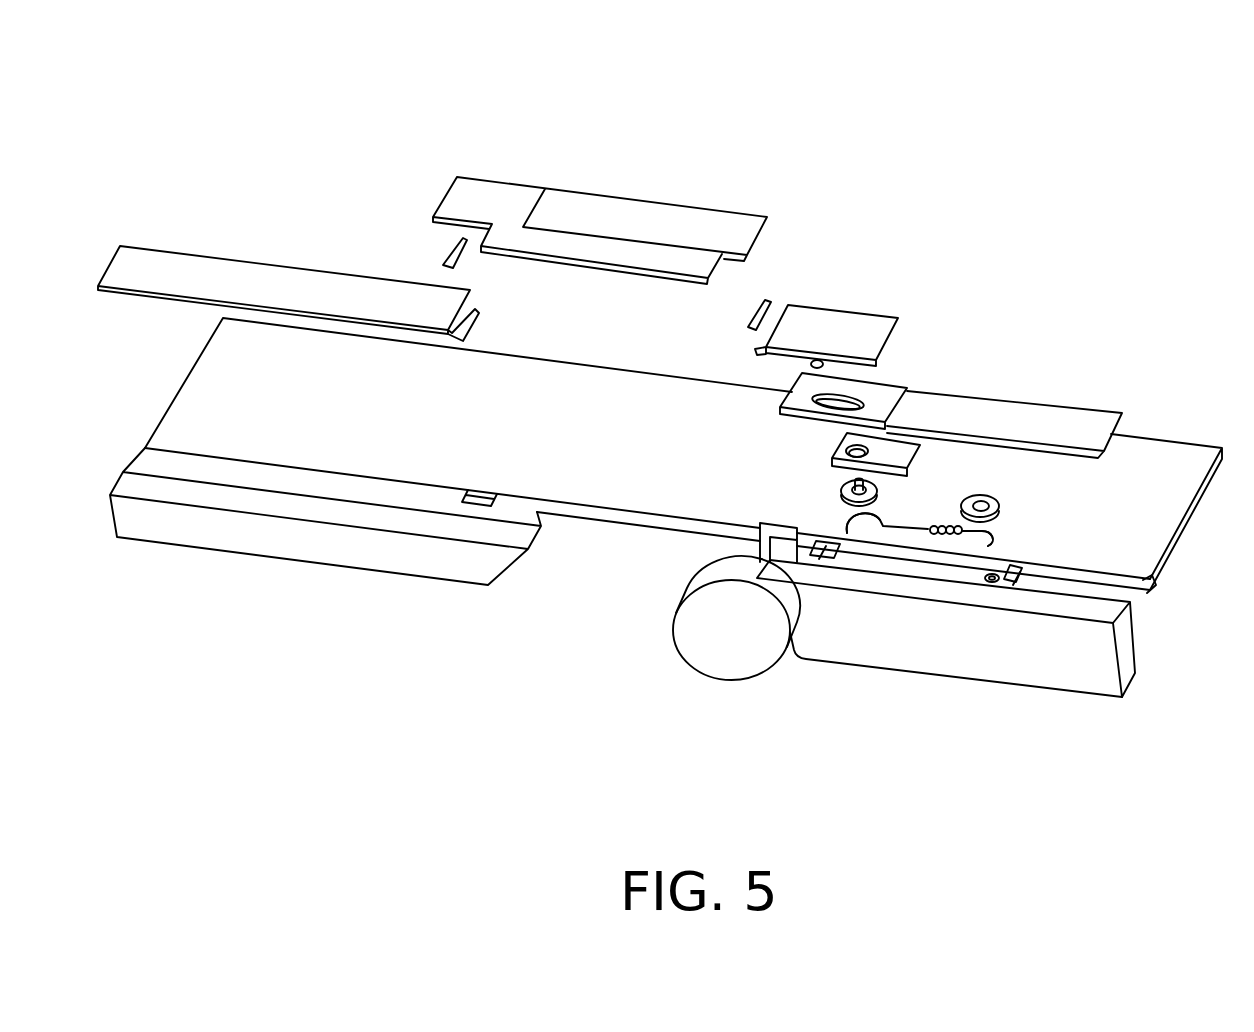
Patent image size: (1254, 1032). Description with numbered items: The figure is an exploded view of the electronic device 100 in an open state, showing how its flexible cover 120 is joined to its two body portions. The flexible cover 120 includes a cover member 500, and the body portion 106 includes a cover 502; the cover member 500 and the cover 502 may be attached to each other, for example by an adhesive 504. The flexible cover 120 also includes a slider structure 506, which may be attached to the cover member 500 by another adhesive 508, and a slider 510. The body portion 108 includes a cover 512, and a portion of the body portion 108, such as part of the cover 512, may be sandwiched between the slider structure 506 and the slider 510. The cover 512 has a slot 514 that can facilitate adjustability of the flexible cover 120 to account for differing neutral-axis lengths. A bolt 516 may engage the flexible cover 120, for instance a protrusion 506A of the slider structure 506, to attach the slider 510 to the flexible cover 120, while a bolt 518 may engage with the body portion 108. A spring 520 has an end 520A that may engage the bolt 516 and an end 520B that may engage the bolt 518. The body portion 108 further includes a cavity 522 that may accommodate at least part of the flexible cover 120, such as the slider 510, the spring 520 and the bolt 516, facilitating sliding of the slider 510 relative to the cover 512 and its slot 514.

The electronic device 100 is at (502, 667).
The body portion 106 is at (213, 552).
The body portion 108 is at (1097, 697).
The flexible cover 120 is at (659, 130).
The cover member 500 is at (505, 182).
The cover 502 is at (126, 254).
The adhesive 504 is at (443, 262).
The slider structure 506 is at (857, 323).
The protrusion 506A is at (812, 362).
The adhesive 508 is at (767, 307).
The slider 510 is at (840, 460).
The cover 512 is at (993, 423).
The slot 514 is at (867, 402).
The bolt 516 is at (847, 488).
The bolt 518 is at (1000, 508).
The spring 520 is at (913, 535).
The end 520A is at (850, 530).
The end 520B is at (990, 543).
The cavity 522 is at (958, 577).